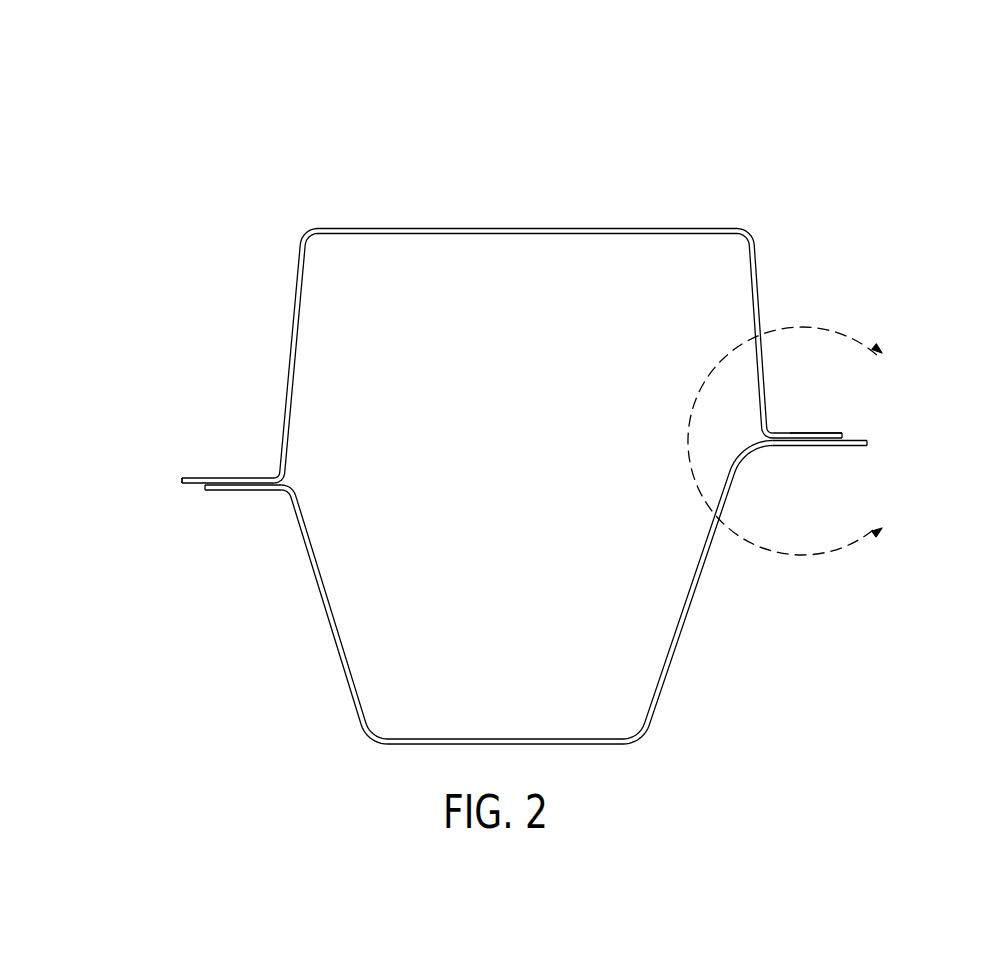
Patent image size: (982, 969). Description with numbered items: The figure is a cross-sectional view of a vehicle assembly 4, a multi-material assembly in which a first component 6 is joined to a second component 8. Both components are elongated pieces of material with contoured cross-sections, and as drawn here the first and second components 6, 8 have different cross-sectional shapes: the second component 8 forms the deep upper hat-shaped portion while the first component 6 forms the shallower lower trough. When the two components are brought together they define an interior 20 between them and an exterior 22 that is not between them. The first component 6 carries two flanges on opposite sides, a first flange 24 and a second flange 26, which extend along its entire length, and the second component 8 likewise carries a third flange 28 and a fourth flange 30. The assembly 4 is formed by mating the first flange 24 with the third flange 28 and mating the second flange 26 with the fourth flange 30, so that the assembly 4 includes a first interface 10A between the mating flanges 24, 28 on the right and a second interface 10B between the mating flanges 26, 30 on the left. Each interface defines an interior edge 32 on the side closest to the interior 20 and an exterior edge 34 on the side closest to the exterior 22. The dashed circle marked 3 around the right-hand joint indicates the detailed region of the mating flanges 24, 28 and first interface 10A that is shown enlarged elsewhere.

The assembly 4 is at (523, 438).
The second component 8 is at (303, 233).
The first component 6 is at (660, 715).
The first interface 10A is at (807, 430).
The second interface 10B is at (242, 474).
The interior 20 is at (519, 502).
The exterior 22 is at (860, 200).
The first flange 24 is at (797, 447).
The second flange 26 is at (220, 492).
The third flange 28 is at (813, 433).
The fourth flange 30 is at (210, 477).
The interior edge 32 is at (323, 482).
The exterior edge 34 is at (200, 500).
The section view indicator 3 is at (793, 441).